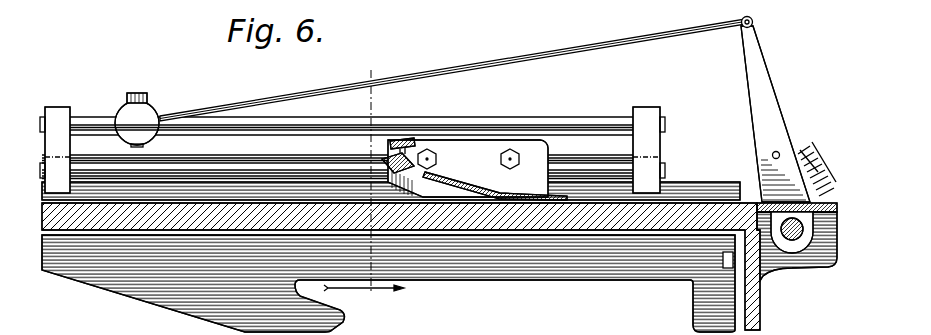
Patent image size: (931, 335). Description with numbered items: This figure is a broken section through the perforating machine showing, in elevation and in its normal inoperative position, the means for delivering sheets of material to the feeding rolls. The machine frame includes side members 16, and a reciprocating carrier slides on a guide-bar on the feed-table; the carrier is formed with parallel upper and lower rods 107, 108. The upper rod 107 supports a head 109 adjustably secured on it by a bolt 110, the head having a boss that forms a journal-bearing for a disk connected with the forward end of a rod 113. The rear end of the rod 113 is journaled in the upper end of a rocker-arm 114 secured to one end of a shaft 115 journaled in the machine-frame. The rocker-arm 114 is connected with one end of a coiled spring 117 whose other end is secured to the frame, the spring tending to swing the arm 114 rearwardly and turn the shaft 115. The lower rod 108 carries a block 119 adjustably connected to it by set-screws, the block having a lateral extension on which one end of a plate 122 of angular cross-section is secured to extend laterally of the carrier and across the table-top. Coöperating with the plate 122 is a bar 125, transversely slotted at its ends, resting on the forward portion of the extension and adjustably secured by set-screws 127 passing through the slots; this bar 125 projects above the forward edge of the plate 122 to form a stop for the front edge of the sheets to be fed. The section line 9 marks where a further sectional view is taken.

The side member 16 is at (695, 305).
The section line 9 is at (364, 195).
The upper rod 107 is at (80, 118).
The lower rod 108 is at (238, 167).
The head 109 is at (140, 112).
The bolt 110 is at (142, 94).
The rod 113 is at (362, 83).
The rocker-arm 114 is at (755, 70).
The shaft 115 is at (791, 240).
The coiled spring 117 is at (803, 160).
The block 119 is at (482, 152).
The plate 122 is at (485, 179).
The bar 125 is at (382, 155).
The set-screw 127 is at (407, 152).